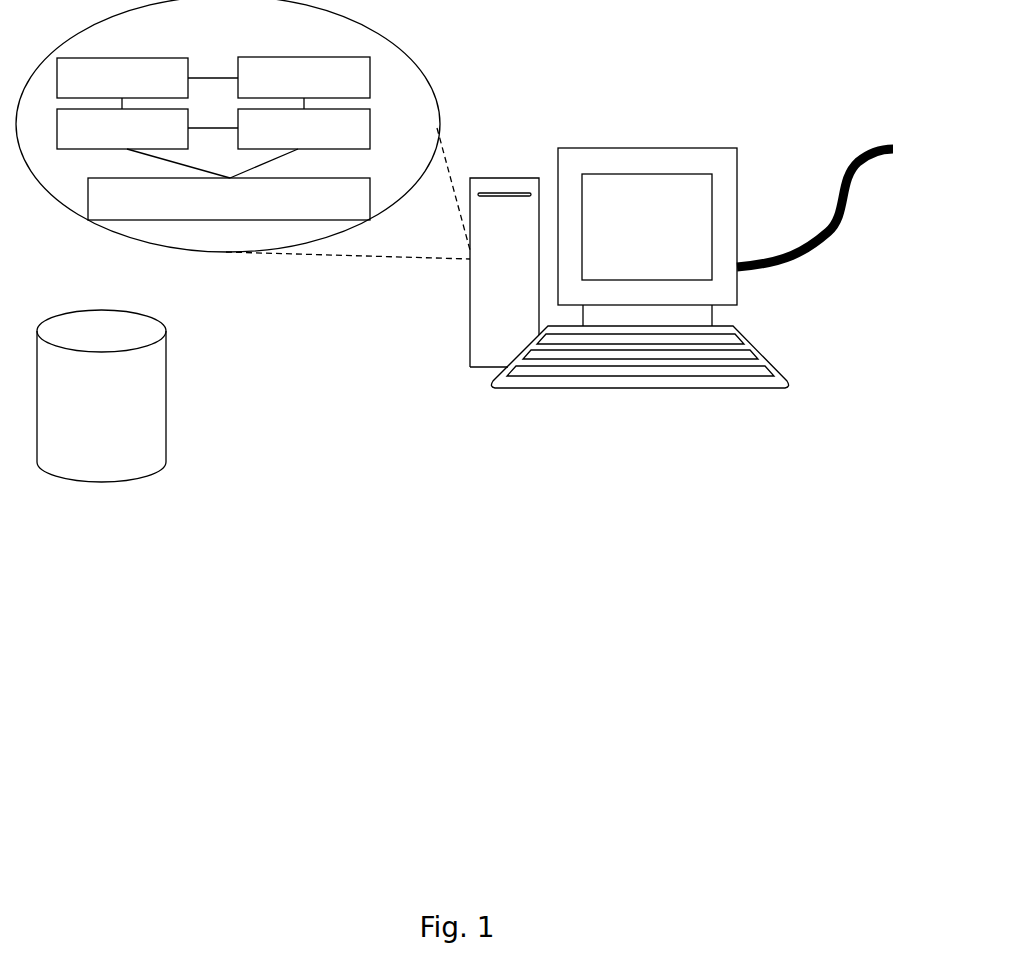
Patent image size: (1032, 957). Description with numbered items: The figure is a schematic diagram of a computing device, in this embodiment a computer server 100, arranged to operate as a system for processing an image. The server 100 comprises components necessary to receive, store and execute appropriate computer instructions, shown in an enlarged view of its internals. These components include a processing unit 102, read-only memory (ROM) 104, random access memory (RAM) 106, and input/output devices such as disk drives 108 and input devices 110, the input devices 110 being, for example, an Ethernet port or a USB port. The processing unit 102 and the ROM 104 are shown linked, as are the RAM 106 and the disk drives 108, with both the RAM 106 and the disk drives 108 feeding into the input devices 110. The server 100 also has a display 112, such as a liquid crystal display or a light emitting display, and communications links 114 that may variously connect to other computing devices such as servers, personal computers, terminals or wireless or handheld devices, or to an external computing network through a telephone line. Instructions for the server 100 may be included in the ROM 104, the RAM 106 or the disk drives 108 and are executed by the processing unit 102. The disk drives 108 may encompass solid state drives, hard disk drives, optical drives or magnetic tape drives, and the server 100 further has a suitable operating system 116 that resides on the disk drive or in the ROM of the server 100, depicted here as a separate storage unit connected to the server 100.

The computer server 100 is at (629, 265).
The processing unit 102 is at (147, 83).
The read-only memory (ROM) 104 is at (304, 83).
The random access memory (RAM) 106 is at (147, 143).
The disk drives 108 is at (300, 143).
The input devices 110 is at (229, 199).
The display 112 is at (632, 149).
The communications links 114 is at (838, 202).
The operating system 116 is at (470, 311).